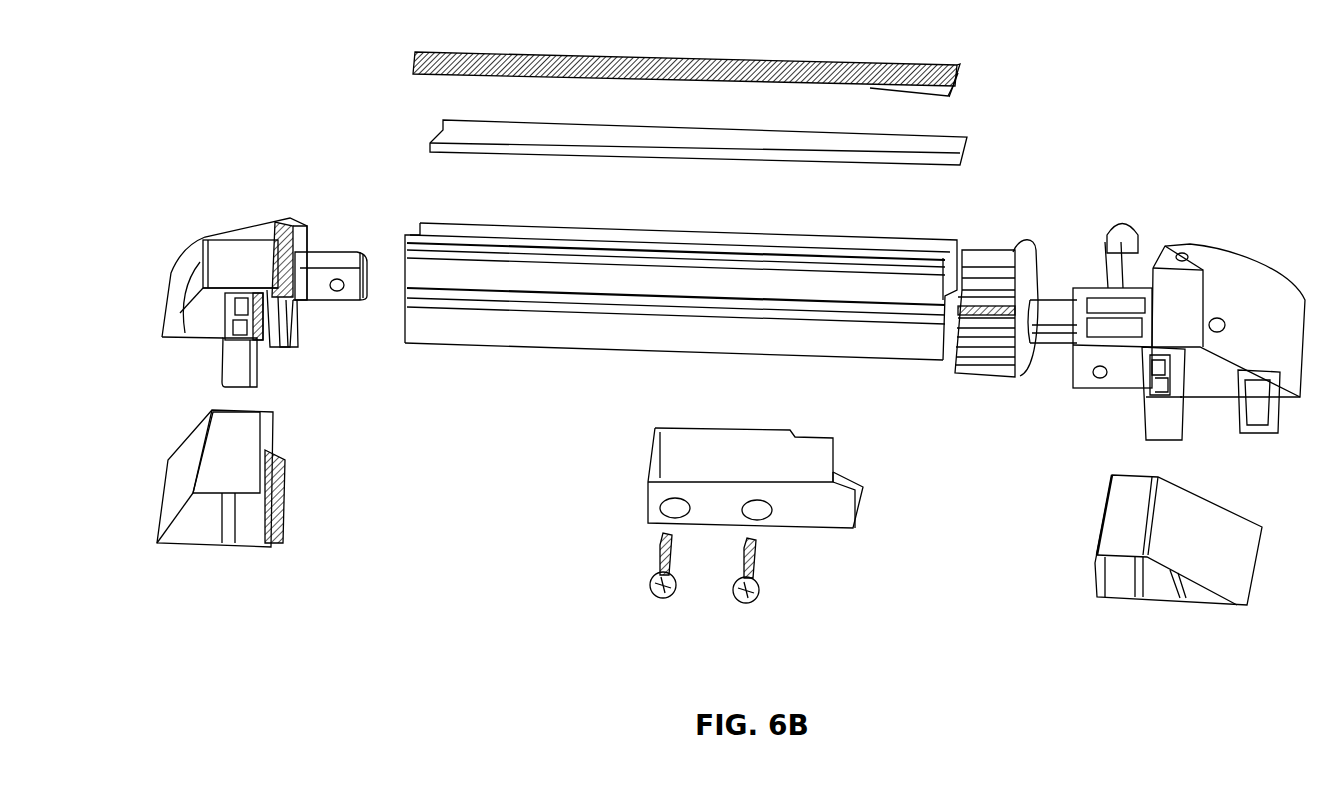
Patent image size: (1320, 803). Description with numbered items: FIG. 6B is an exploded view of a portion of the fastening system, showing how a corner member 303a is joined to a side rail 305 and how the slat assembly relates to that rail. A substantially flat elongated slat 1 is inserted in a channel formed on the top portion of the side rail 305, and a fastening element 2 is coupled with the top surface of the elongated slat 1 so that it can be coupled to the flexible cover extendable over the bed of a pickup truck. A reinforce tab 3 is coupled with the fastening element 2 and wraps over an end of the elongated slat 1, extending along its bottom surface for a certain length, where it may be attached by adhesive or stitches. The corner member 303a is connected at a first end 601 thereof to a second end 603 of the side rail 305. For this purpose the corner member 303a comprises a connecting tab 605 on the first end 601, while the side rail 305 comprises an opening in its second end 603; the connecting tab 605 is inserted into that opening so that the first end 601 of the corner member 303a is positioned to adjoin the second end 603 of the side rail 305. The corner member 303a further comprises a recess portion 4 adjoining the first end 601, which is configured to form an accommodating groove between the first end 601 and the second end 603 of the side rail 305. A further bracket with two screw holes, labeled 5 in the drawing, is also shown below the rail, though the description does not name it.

The elongated slat 1 is at (437, 137).
The fastening element 2 is at (420, 62).
The reinforce tab 3 is at (950, 97).
The corner member 303a is at (245, 233).
The connecting tab 605 is at (335, 265).
The recess portion 4 is at (288, 300).
The first end 601 is at (273, 338).
The second end 603 is at (662, 328).
The side rail 305 is at (545, 327).
The bracket 5 is at (838, 507).